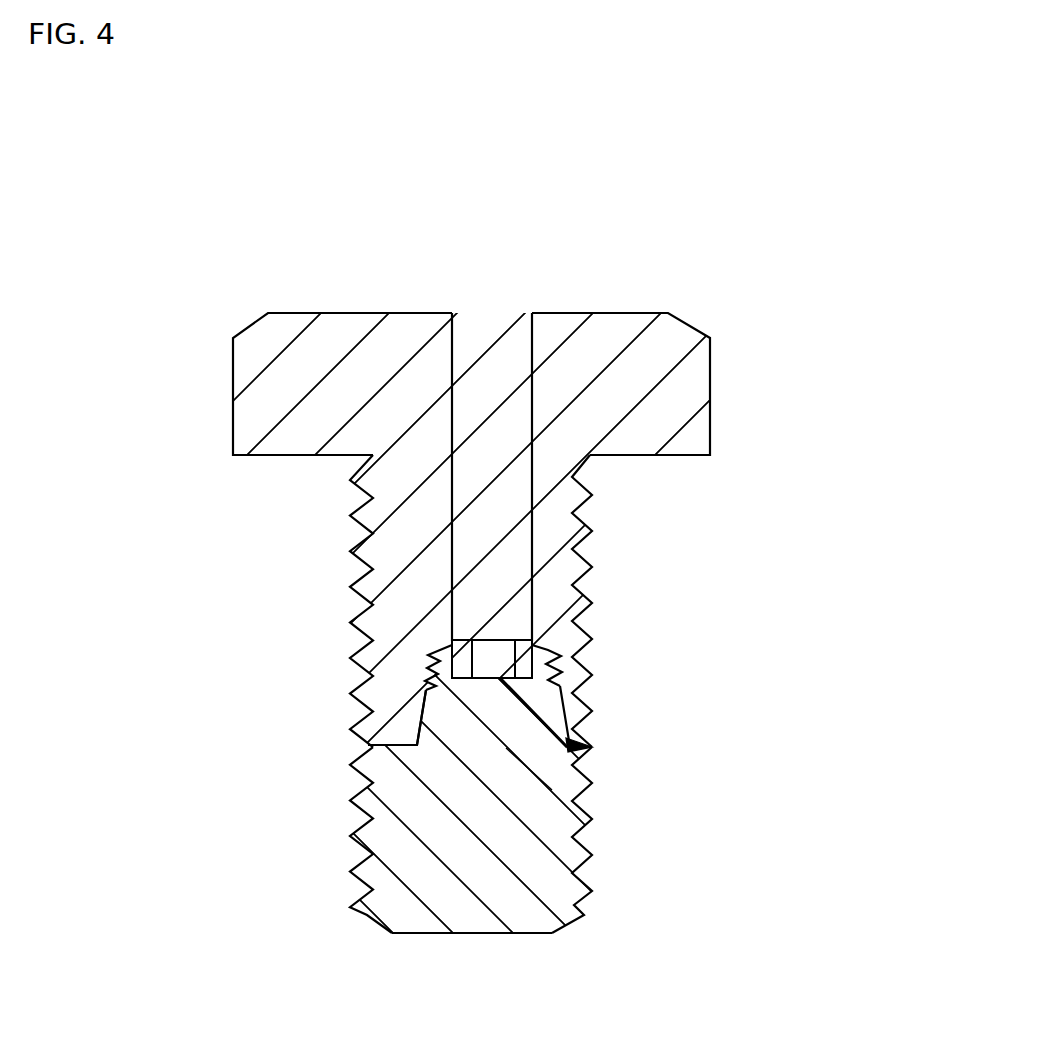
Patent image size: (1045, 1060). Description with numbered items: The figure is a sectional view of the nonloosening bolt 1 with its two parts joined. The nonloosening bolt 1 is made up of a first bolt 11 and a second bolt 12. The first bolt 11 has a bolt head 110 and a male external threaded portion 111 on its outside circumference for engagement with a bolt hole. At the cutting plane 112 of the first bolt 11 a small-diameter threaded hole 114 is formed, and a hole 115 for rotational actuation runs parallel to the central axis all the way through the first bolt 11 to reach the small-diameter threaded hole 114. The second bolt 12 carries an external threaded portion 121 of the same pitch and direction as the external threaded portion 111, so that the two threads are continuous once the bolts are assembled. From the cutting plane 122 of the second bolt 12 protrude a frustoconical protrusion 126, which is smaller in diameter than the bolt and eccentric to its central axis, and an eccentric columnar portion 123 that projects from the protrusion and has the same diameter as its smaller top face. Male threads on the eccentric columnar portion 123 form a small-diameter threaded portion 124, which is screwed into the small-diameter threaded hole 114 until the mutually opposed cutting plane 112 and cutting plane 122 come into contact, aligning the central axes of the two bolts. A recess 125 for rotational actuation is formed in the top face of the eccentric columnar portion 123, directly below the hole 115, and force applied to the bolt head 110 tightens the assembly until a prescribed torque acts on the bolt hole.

The nonloosening bolt 1 is at (358, 265).
The first bolt 11 is at (200, 305).
The bolt head 110 is at (233, 402).
The external threaded portion 111 is at (355, 660).
The cutting plane 112 is at (402, 745).
The small-diameter threaded hole 114 is at (487, 665).
The hole for rotational actuation 115 is at (701, 230).
The second bolt 12 is at (318, 853).
The external threaded portion 121 is at (350, 869).
The cutting plane 122 is at (368, 776).
The eccentric columnar portion 123 is at (537, 640).
The small-diameter threaded portion 124 is at (570, 684).
The recess for rotational actuation 125 is at (503, 750).
The frustoconical protrusion 126 is at (585, 744).